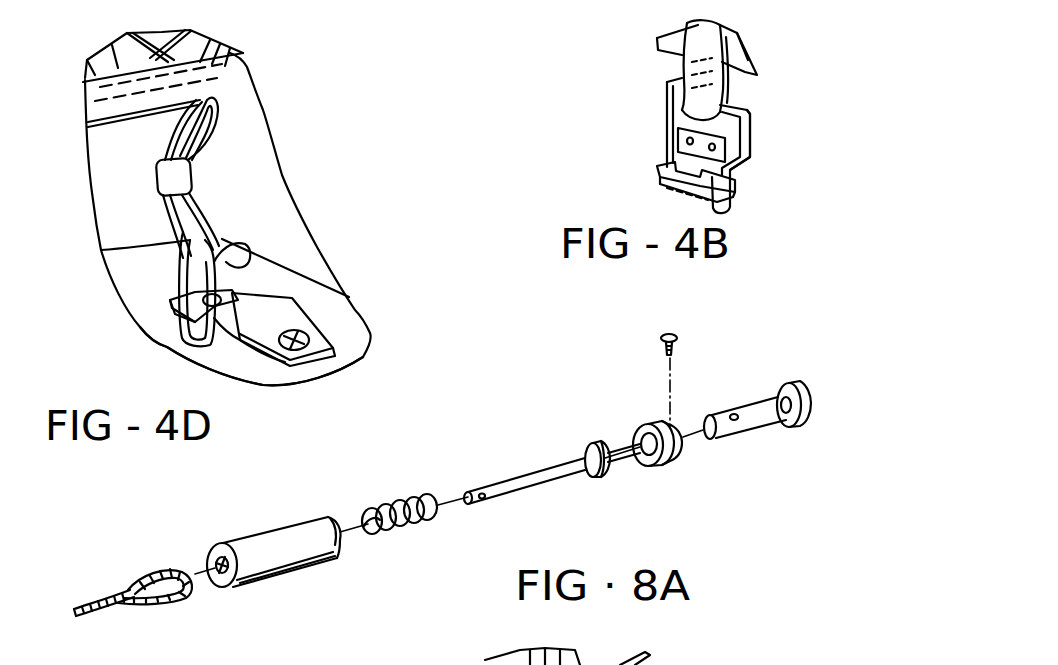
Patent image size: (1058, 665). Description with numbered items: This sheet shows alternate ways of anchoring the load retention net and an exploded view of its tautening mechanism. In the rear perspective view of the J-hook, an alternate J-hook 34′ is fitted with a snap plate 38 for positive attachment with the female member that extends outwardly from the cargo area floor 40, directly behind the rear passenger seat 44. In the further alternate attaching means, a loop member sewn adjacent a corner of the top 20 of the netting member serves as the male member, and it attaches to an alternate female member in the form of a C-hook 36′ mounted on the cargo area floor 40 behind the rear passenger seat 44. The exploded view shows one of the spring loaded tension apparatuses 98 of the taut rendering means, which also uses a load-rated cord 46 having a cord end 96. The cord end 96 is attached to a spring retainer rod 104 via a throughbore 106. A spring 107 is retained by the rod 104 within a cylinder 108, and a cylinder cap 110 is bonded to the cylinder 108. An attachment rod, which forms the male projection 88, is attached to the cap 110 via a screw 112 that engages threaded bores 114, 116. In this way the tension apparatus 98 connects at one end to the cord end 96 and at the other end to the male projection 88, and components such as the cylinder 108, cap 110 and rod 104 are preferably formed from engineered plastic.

In FIG. 4D, the top 20 is at (230, 73).
In FIG. 4B, the top 20 is at (740, 57).
In FIG. 4B, the alternate J-hook 34′ is at (660, 122).
In FIG. 4D, the C-hook 36′ is at (207, 330).
In FIG. 4B, the snap plate 38 is at (736, 173).
In FIG. 4D, the cargo area floor 40 is at (143, 285).
In FIG. 4D, the rear passenger seat 44 is at (105, 168).
In FIG. 8A, the load-rated cord 46 is at (108, 610).
In FIG. 8A, the attachment rod/male projection 88 is at (750, 420).
In FIG. 8A, the cord end 96 is at (152, 576).
In FIG. 8A, the spring loaded tension apparatus 98 is at (268, 585).
In FIG. 8A, the spring retainer rod 104 is at (518, 476).
In FIG. 8A, the throughbore 106 is at (483, 500).
In FIG. 8A, the spring 107 is at (384, 503).
In FIG. 8A, the cylinder 108 is at (302, 480).
In FIG. 8A, the cylinder cap 110 is at (645, 426).
In FIG. 8A, the screw 112 is at (678, 339).
In FIG. 8A, the threaded bore 114 is at (672, 454).
In FIG. 8A, the threaded bore 116 is at (743, 422).